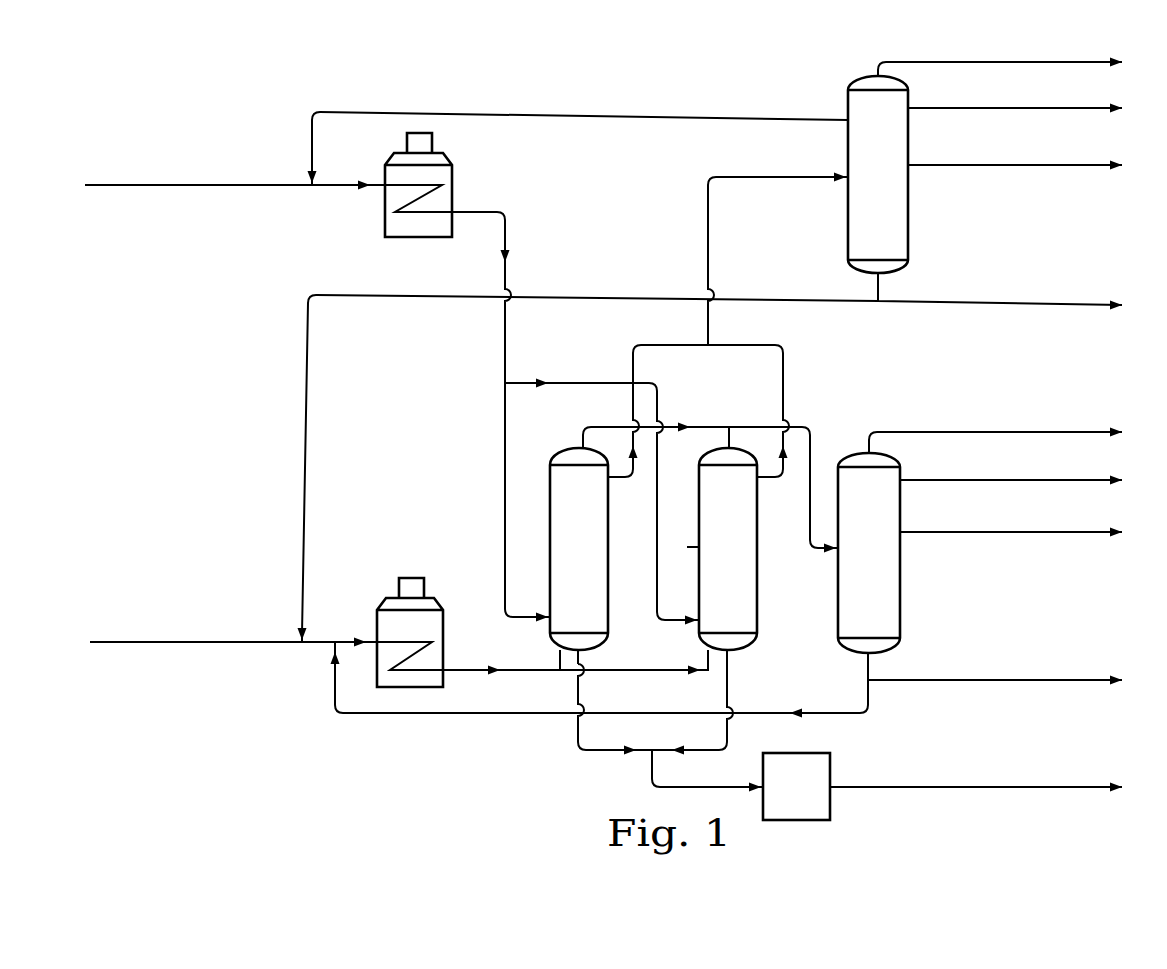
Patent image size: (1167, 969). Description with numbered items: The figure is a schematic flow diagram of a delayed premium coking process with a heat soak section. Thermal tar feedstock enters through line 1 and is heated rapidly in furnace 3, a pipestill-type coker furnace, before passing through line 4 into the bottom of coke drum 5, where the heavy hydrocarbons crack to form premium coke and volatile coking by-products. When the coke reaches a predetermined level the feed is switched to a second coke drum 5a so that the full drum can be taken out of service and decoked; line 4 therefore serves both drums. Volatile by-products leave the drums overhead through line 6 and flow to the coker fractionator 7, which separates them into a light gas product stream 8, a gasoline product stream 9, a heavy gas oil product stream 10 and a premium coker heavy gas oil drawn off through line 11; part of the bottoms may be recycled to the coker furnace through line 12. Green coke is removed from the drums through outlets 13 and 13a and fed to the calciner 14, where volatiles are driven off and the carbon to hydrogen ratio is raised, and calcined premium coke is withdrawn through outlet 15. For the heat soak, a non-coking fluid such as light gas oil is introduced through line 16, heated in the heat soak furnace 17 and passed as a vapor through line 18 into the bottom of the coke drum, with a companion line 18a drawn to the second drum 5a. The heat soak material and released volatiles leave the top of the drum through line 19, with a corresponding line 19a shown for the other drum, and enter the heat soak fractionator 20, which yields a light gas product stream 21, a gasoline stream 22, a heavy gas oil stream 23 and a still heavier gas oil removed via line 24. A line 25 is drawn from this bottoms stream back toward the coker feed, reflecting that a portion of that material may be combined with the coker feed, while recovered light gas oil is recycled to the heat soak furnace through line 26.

The feedstock line 1 is at (215, 643).
The furnace 3 is at (373, 612).
The line 4 is at (556, 668).
The coke drum 5 is at (579, 559).
The second coke drum 5a is at (722, 549).
The line 6 is at (808, 434).
The coker fractionator 7 is at (942, 566).
The C1-C3 product stream 8 is at (1062, 432).
The gasoline product stream 9 is at (1092, 480).
The heavy gas oil product stream 10 is at (1050, 532).
The line 11 is at (1043, 680).
The line 12 is at (428, 713).
The outlet 13 is at (580, 693).
The outlet 13a is at (727, 690).
The calciner 14 is at (793, 785).
The outlet 15 is at (1007, 788).
The line 16 is at (183, 186).
The heat soak furnace 17 is at (452, 185).
The line 18 is at (503, 440).
The heat soak effluent branch line to coke drum 5a 18a is at (580, 383).
The line 19 is at (633, 357).
The coke drum vapor line to heat soak fractionator 19a is at (788, 368).
The heat soak fractionator 20 is at (806, 162).
The C1-C3 product stream 21 is at (1085, 62).
The gasoline stream 22 is at (1052, 108).
The heavy gas oil stream 23 is at (1070, 165).
The line 24 is at (1035, 305).
The heat soak fractionator bottoms recycle line to coker 25 is at (598, 295).
The line 26 is at (560, 115).